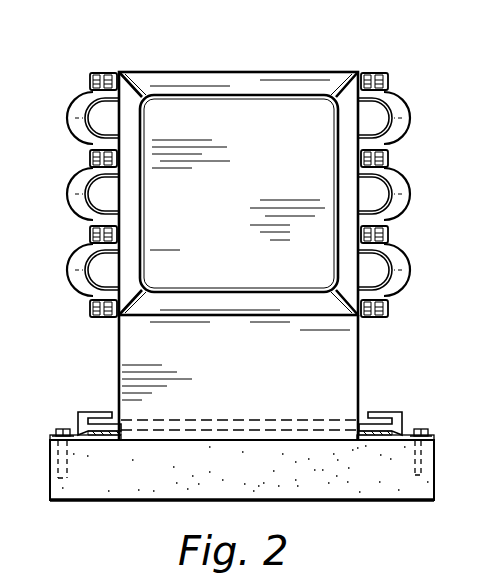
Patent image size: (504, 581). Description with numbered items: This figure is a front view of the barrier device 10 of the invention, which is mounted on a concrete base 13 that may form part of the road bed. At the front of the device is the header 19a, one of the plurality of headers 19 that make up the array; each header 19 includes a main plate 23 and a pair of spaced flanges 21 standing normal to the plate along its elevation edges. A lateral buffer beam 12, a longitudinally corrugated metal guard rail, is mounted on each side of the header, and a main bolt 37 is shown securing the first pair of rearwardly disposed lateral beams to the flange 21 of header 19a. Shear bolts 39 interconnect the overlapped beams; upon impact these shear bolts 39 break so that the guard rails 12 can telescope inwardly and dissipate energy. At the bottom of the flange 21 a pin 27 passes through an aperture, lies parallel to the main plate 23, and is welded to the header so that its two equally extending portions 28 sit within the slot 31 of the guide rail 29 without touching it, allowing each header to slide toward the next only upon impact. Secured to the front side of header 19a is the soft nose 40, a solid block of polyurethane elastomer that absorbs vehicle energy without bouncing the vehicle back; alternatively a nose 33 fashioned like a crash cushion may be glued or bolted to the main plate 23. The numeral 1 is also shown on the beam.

The pipe conduit 1 is at (403, 247).
The device 10 is at (289, 70).
The lateral buffer beam 12 is at (236, 194).
The concrete base 13 is at (62, 467).
The header 19 is at (150, 400).
The front header 19a is at (362, 363).
The flange 21 is at (119, 370).
The main plate 23 is at (221, 386).
The pin 27 is at (319, 428).
The extending portions of pin 28 is at (102, 441).
The guide rail 29 is at (77, 424).
The slot 31 is at (86, 412).
The nose 33 is at (198, 77).
The main bolt 37 is at (108, 73).
The shear bolt 39 is at (91, 81).
The soft nose 40 is at (162, 77).